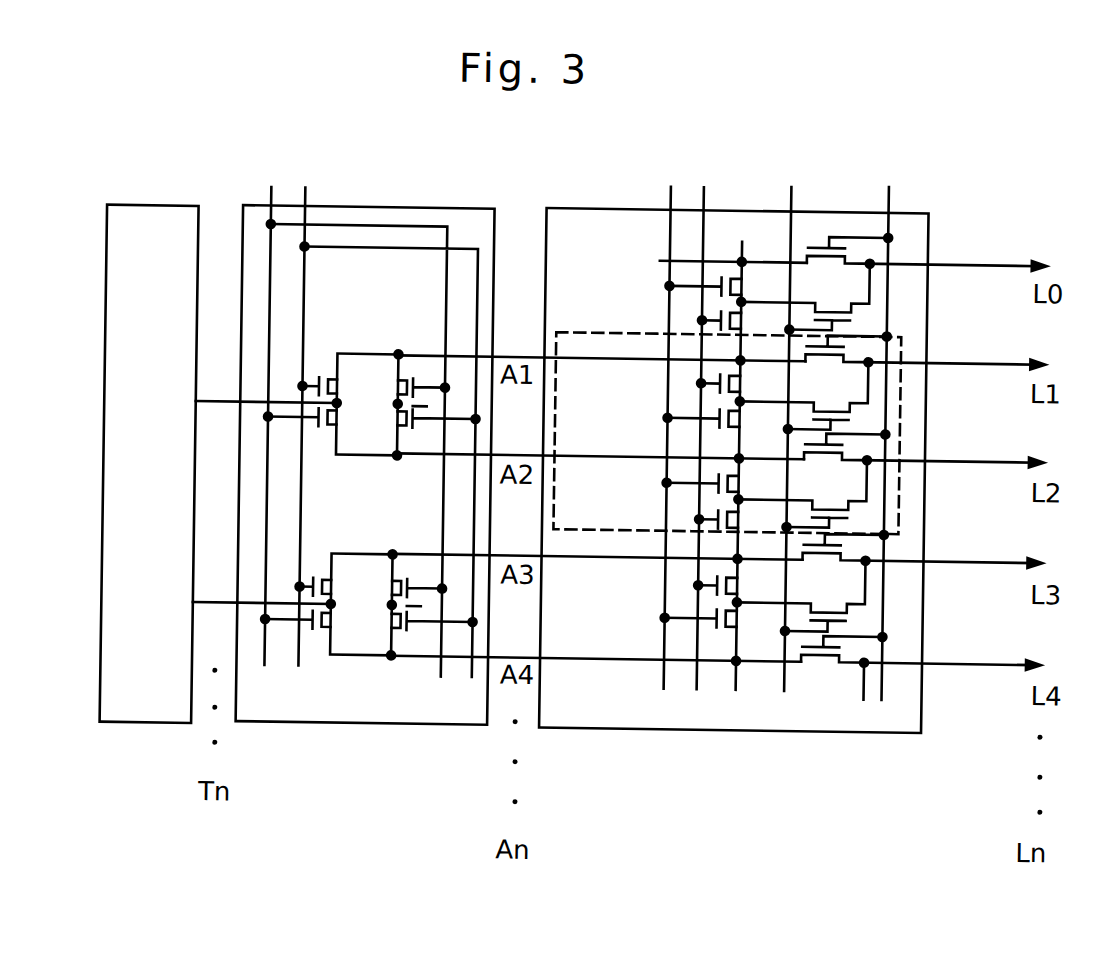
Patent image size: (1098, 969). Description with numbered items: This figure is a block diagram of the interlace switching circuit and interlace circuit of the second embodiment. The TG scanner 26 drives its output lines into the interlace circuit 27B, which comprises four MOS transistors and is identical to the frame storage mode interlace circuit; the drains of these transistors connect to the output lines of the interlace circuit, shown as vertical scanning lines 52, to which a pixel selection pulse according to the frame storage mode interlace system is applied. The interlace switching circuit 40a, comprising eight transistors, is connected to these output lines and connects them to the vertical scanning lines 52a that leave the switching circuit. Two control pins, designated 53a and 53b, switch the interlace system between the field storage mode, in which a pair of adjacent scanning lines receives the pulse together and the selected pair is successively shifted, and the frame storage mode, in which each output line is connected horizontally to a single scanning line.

The TG scanner 26 is at (152, 733).
The interlace circuit 27B is at (377, 732).
The interlace switching circuit 40a is at (770, 733).
The vertical scanning lines 52 is at (514, 356).
The vertical scanning lines 52a is at (985, 258).
The control pin F1 53a is at (794, 200).
The control pin FR 53b is at (891, 198).